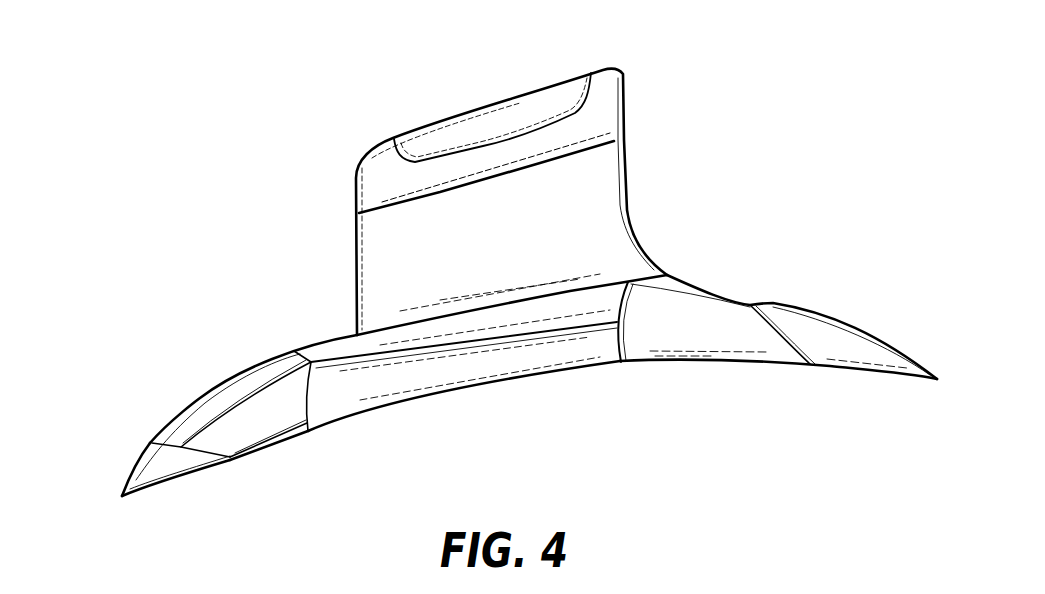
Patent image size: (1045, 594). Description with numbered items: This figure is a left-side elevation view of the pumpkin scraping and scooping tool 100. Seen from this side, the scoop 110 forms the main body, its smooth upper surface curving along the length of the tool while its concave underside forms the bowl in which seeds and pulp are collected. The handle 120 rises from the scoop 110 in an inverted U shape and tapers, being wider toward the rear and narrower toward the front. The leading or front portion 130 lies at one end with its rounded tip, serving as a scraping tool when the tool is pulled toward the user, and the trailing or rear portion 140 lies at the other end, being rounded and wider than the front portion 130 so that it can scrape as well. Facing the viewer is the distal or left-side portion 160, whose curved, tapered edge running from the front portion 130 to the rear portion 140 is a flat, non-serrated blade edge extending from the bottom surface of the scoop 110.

The pumpkin scraping and scooping tool 100 is at (128, 83).
The scoop 110 is at (253, 367).
The handle 120 is at (625, 185).
The front portion 130 is at (130, 476).
The rear portion 140 is at (926, 366).
The left-side portion 160 is at (552, 373).